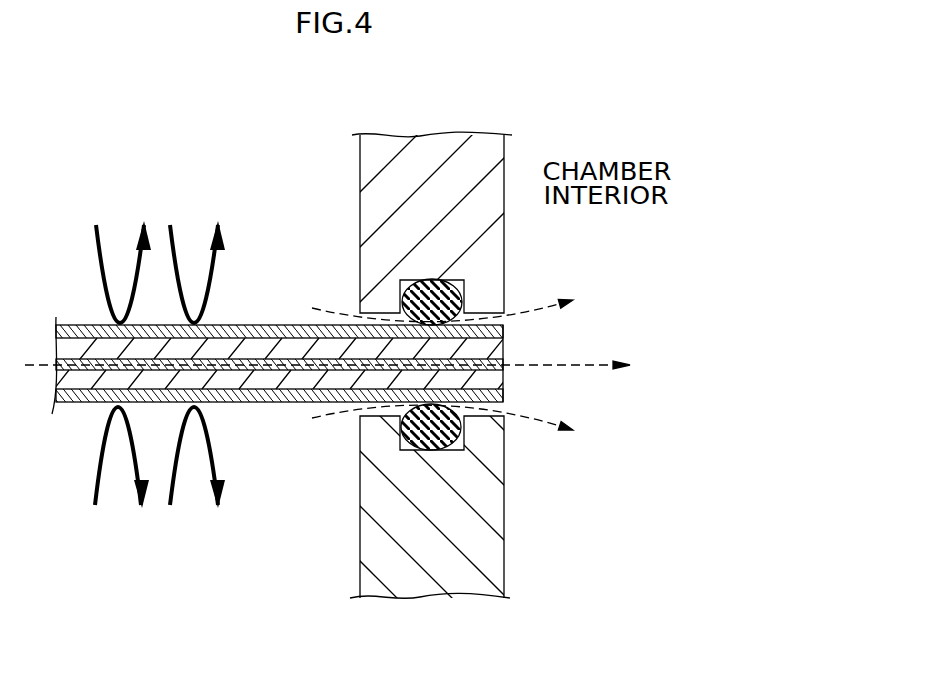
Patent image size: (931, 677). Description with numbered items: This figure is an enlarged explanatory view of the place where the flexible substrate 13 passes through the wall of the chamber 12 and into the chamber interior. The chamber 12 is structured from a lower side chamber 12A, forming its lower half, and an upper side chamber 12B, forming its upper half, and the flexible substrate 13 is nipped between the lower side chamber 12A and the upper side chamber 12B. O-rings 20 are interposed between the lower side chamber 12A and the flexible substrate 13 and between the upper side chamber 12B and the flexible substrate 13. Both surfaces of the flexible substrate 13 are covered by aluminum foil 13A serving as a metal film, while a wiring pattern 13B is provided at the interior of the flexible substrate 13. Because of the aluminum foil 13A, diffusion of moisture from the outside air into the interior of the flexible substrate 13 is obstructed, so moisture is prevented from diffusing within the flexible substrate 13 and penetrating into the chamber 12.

The chamber 12 is at (447, 373).
The lower side chamber 12A is at (360, 535).
The upper side chamber 12B is at (360, 212).
The flexible substrate 13 is at (281, 410).
The aluminum foil 13A is at (278, 325).
The wiring pattern 13B is at (163, 367).
The O-rings 20 is at (440, 301).